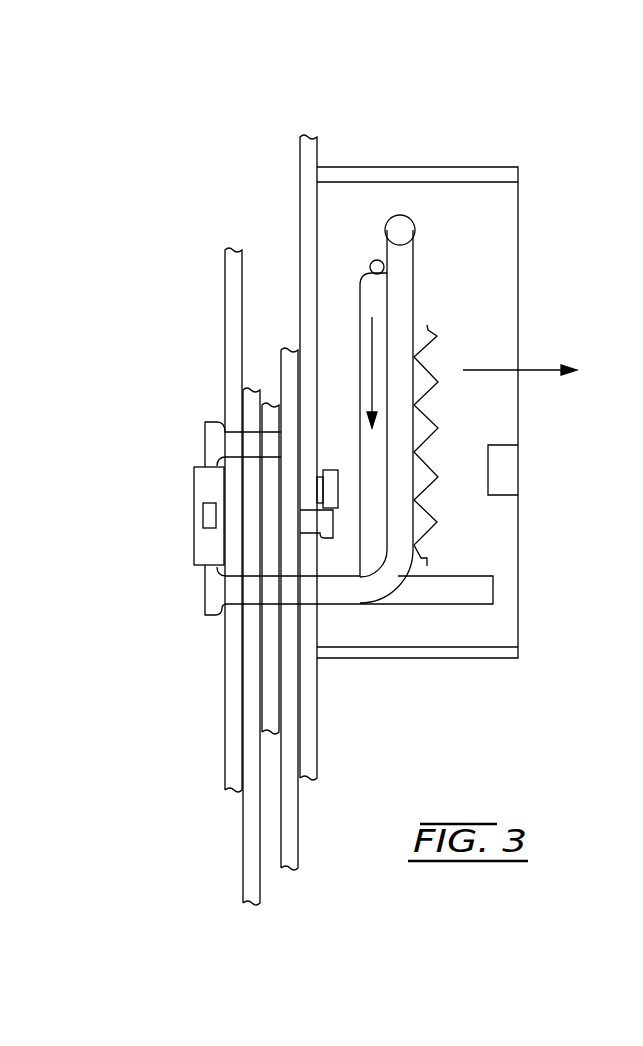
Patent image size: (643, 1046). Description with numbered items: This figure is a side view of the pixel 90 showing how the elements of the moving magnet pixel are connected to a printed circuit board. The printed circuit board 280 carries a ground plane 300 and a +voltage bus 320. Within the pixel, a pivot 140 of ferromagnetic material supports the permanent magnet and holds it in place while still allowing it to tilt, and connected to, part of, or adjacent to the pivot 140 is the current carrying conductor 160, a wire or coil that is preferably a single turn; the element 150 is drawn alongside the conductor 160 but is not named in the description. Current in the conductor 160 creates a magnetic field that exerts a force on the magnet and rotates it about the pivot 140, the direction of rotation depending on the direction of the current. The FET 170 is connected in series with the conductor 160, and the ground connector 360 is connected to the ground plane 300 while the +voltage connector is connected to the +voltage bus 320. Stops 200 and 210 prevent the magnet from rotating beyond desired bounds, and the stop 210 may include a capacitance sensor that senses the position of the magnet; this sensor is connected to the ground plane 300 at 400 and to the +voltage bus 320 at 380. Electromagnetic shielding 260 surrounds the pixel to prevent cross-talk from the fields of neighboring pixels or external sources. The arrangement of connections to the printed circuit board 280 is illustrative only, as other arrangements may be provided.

The pixel 90 is at (480, 103).
The pivot 140 is at (376, 260).
The heating element 150 is at (427, 325).
The current carrying conductor 160 is at (414, 263).
The FET 170 is at (199, 512).
The stop 200 is at (508, 472).
The stop 210 is at (328, 468).
The electromagnetic shielding 260 is at (376, 176).
The printed circuit board 280 is at (226, 700).
The ground plane 300 is at (293, 346).
The +voltage bus 320 is at (255, 386).
The ground connector 360 is at (205, 433).
The connection of capacitance sensor to +voltage bus 380 is at (318, 490).
The connection of capacitance sensor to ground plane 400 is at (337, 517).